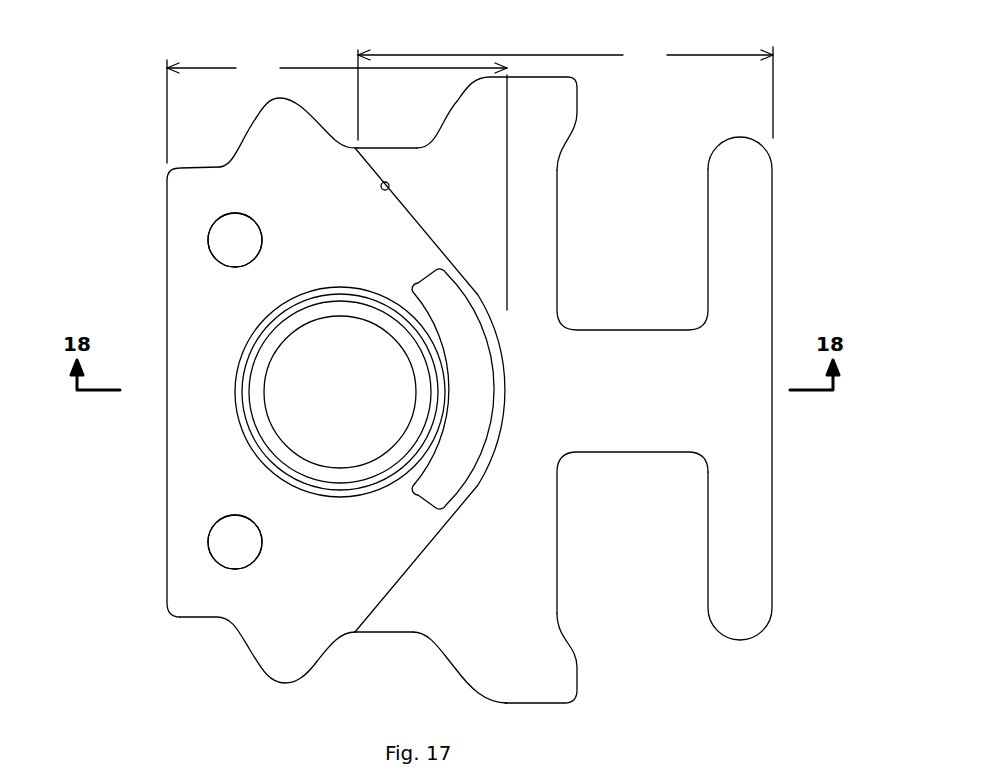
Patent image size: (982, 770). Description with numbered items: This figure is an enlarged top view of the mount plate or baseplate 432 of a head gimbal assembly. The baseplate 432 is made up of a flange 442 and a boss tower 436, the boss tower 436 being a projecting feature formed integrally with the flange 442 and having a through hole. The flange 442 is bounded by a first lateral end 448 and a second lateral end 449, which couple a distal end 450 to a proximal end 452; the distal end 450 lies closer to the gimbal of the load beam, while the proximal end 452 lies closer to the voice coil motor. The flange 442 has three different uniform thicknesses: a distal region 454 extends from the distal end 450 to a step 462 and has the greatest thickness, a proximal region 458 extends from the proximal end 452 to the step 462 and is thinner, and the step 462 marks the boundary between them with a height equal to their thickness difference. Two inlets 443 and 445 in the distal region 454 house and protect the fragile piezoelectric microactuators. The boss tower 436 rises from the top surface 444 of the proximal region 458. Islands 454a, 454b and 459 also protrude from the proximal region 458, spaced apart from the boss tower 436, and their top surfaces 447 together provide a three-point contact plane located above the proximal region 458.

The baseplate 432 is at (810, 101).
The boss tower 436 is at (368, 308).
The flange 442 is at (407, 652).
The inlet 443 is at (634, 522).
The top surface 444 is at (228, 477).
The inlet 445 is at (638, 214).
The top surfaces 447 is at (243, 230).
The first lateral end 448 is at (380, 147).
The second lateral end 449 is at (358, 633).
The distal end 450 is at (773, 227).
The proximal end 452 is at (165, 302).
The distal region 454 is at (565, 91).
The island 454a is at (207, 240).
The island 454b is at (207, 542).
The proximal region 458 is at (337, 183).
The island 459 is at (493, 386).
The step 462 is at (388, 180).